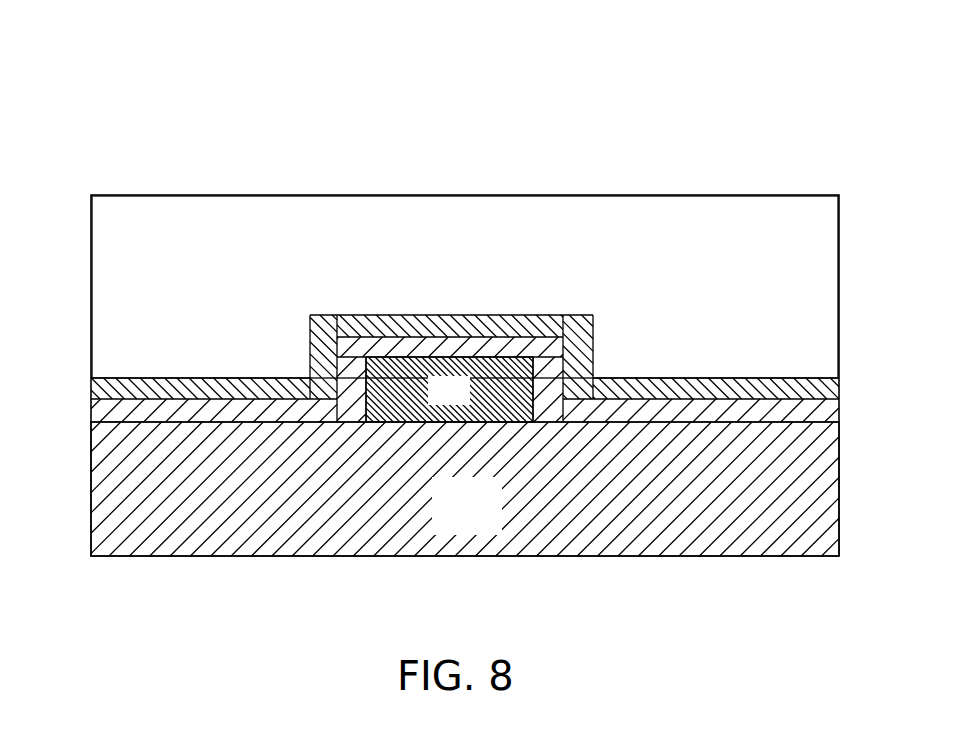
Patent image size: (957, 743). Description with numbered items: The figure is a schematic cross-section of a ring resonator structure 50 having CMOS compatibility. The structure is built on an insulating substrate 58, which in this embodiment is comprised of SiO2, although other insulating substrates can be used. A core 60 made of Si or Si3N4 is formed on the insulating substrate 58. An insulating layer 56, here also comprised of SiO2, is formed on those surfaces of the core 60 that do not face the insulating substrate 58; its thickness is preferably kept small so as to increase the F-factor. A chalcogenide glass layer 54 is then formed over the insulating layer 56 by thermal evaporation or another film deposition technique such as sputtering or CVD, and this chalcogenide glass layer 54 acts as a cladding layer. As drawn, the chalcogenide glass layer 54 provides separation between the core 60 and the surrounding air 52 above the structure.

The ring resonator structure 50 is at (74, 107).
The air 52 is at (480, 276).
The chalcogenide glass layer 54 is at (200, 377).
The insulating layer 56 is at (104, 410).
The insulating substrate 58 is at (478, 530).
The core 60 is at (463, 402).